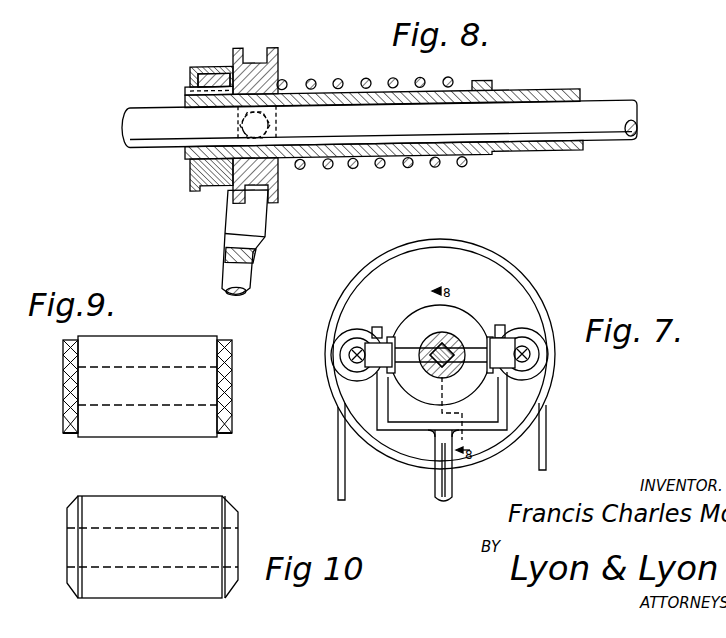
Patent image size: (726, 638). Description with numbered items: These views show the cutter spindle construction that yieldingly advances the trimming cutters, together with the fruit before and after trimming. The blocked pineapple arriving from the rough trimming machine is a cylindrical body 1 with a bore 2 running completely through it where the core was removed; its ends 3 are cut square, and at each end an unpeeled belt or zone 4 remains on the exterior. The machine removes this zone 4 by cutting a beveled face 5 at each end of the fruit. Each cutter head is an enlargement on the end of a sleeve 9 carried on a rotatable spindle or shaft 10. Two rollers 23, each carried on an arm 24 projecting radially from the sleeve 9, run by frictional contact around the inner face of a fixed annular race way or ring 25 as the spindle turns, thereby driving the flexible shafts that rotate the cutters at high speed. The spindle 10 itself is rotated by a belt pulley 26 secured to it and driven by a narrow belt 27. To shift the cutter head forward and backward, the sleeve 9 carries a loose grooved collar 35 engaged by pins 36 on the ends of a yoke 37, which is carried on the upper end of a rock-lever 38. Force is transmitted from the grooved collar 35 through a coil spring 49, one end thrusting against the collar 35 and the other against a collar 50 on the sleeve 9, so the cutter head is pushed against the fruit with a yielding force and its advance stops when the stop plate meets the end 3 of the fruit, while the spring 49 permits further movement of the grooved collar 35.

In FIG. 9, the cylindrical body 1 is at (180, 344).
In FIG. 10, the cylindrical body 1 is at (164, 505).
In FIG. 9, the bore 2 is at (88, 368).
In FIG. 10, the bore 2 is at (92, 538).
In FIG. 9, the ends 3 is at (230, 349).
In FIG. 9, the belt or zone 4 is at (70, 435).
In FIG. 10, the beveled face 5 is at (75, 500).
In FIG. 8, the sleeve 9 is at (548, 89).
In FIG. 8, the spindle or shaft 10 is at (605, 101).
In FIG. 7, the spindle or shaft 10 is at (447, 333).
In FIG. 7, the rollers 23 is at (345, 378).
In FIG. 7, the arm 24 is at (405, 350).
In FIG. 7, the annular race way or ring 25 is at (533, 285).
In FIG. 8, the belt pulley 26 is at (185, 88).
In FIG. 8, the narrow belt 27 is at (213, 66).
In FIG. 8, the loose collar 35 is at (274, 72).
In FIG. 8, the pins 36 is at (190, 186).
In FIG. 8, the yoke 37 is at (226, 218).
In FIG. 7, the yoke 37 is at (406, 428).
In FIG. 7, the rock-lever 38 is at (437, 483).
In FIG. 8, the coil spring 49 is at (322, 170).
In FIG. 8, the collar 50 is at (480, 82).